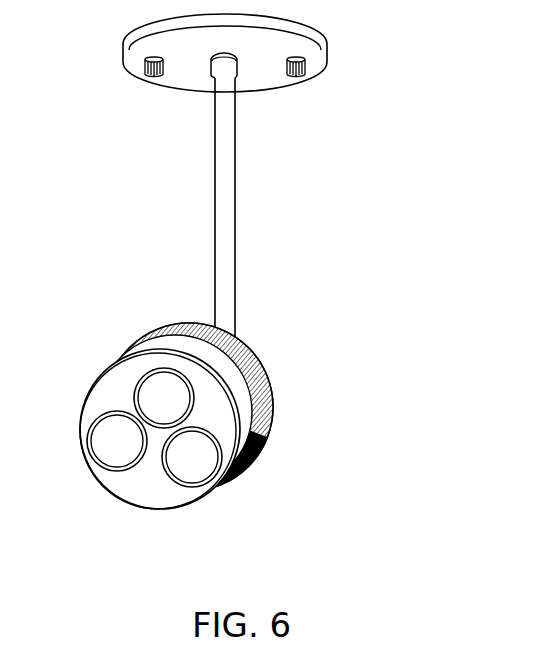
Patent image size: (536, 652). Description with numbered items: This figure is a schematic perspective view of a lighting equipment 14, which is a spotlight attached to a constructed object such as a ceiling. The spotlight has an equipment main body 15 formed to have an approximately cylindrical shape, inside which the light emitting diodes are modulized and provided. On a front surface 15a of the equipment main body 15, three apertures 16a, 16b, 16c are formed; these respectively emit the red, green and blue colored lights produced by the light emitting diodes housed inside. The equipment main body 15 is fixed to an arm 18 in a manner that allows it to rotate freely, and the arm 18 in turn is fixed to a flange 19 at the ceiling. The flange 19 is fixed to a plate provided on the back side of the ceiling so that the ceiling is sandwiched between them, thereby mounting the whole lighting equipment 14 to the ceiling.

The lighting equipment 14 is at (213, 281).
The equipment main body 15 is at (170, 418).
The front surface 15a is at (158, 509).
The aperture 16a is at (148, 388).
The aperture 16b is at (105, 427).
The aperture 16c is at (205, 470).
The arm 18 is at (215, 203).
The flange 19 is at (269, 89).